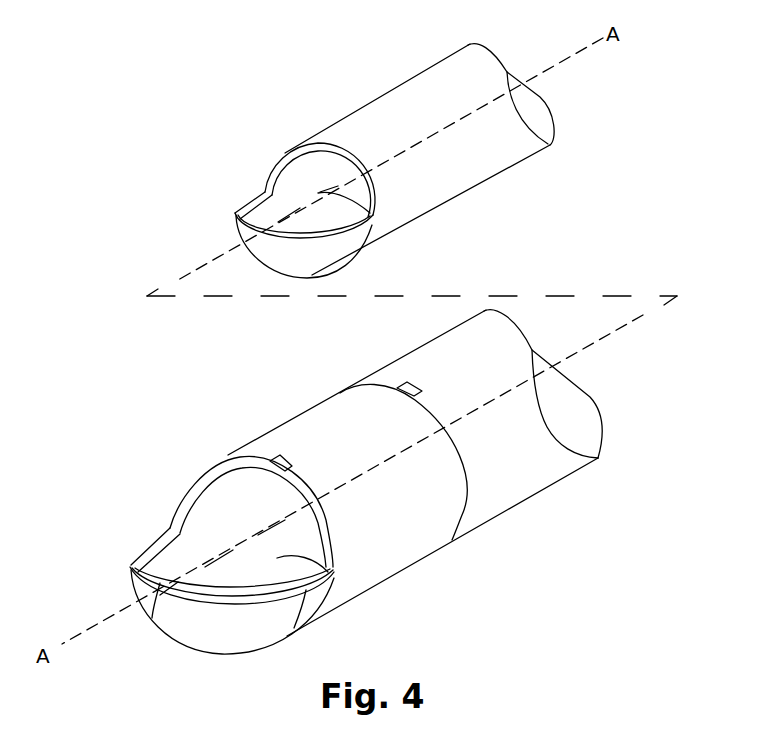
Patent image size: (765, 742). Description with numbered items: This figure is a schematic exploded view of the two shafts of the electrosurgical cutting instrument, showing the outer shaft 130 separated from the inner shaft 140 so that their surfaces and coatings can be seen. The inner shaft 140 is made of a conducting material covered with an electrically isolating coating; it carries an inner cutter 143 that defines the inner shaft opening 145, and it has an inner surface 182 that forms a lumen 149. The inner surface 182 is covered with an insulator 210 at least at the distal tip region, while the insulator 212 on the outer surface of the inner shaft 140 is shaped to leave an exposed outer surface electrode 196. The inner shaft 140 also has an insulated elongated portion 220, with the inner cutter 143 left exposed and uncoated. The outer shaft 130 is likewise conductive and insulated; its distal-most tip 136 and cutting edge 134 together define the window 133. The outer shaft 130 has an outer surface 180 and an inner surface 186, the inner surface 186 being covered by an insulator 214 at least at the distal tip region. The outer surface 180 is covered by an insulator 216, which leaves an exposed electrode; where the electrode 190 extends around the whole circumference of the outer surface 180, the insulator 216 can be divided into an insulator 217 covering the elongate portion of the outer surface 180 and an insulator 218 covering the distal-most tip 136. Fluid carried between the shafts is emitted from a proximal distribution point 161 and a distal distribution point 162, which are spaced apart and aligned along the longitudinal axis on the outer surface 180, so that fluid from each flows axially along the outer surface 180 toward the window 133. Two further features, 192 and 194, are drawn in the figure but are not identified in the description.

The outer shaft 130 is at (478, 568).
The window 133 is at (155, 480).
The cutting edge 134 is at (150, 550).
The distal-most tip 136 is at (128, 603).
The inner shaft 140 is at (390, 70).
The inner cutter 143 is at (232, 163).
The inner shaft opening 145 is at (303, 172).
The lumen 149 is at (325, 172).
The proximal distribution point 161 is at (424, 390).
The distal distribution point 162 is at (296, 466).
The outer surface 180 is at (535, 476).
The inner surface 182 is at (262, 209).
The inner surface 186 is at (222, 500).
The electrode 190 is at (283, 418).
The second bowl body 192 is at (185, 640).
The first tube cut edge 194 is at (502, 157).
The outer surface electrode 196 is at (310, 263).
The insulator 210 is at (431, 169).
The insulator 212 is at (377, 220).
The insulator 214 is at (330, 587).
The insulator 216 is at (530, 437).
The insulator 217 is at (492, 503).
The insulator 218 is at (157, 607).
The insulated elongated portion 220 is at (310, 610).